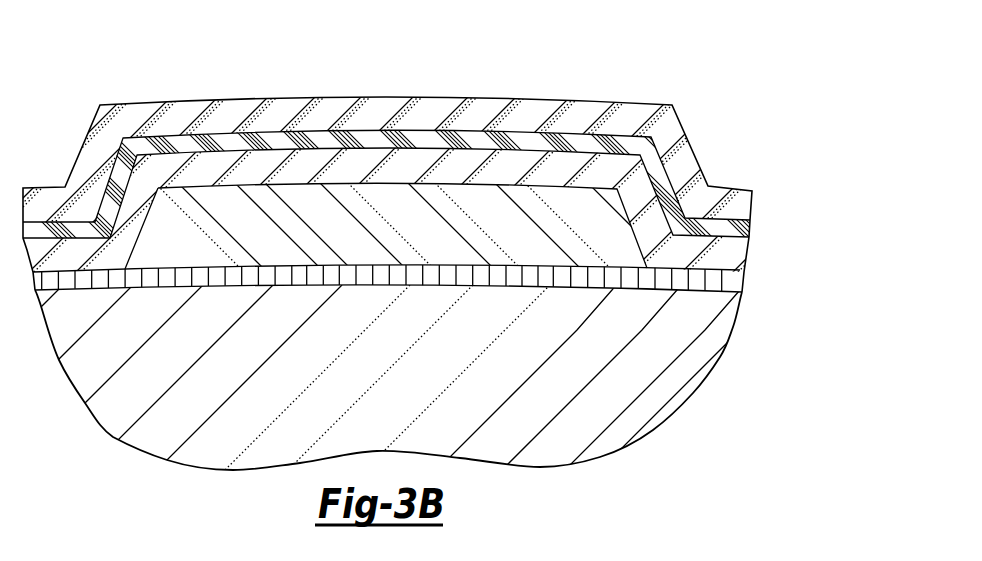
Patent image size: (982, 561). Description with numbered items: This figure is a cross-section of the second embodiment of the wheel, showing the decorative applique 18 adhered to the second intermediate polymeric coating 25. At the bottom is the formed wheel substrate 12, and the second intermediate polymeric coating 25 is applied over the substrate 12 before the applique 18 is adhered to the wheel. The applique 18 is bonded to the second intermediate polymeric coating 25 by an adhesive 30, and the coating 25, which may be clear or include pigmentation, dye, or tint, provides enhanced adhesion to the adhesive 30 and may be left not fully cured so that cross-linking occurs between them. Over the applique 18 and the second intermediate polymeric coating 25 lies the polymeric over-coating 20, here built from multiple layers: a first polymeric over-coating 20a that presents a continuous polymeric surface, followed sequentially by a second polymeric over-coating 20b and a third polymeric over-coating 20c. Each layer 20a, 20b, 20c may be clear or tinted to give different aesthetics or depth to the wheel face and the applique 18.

The wheel substrate 12 is at (395, 422).
The decorative applique 18 is at (341, 231).
The polymeric over-coating 20 is at (491, 191).
The first polymeric over-coating 20a is at (742, 255).
The second polymeric over-coating 20b is at (742, 228).
The third polymeric over-coating 20c is at (712, 165).
The second intermediate polymeric coating 25 is at (742, 283).
The adhesive 30 is at (443, 265).